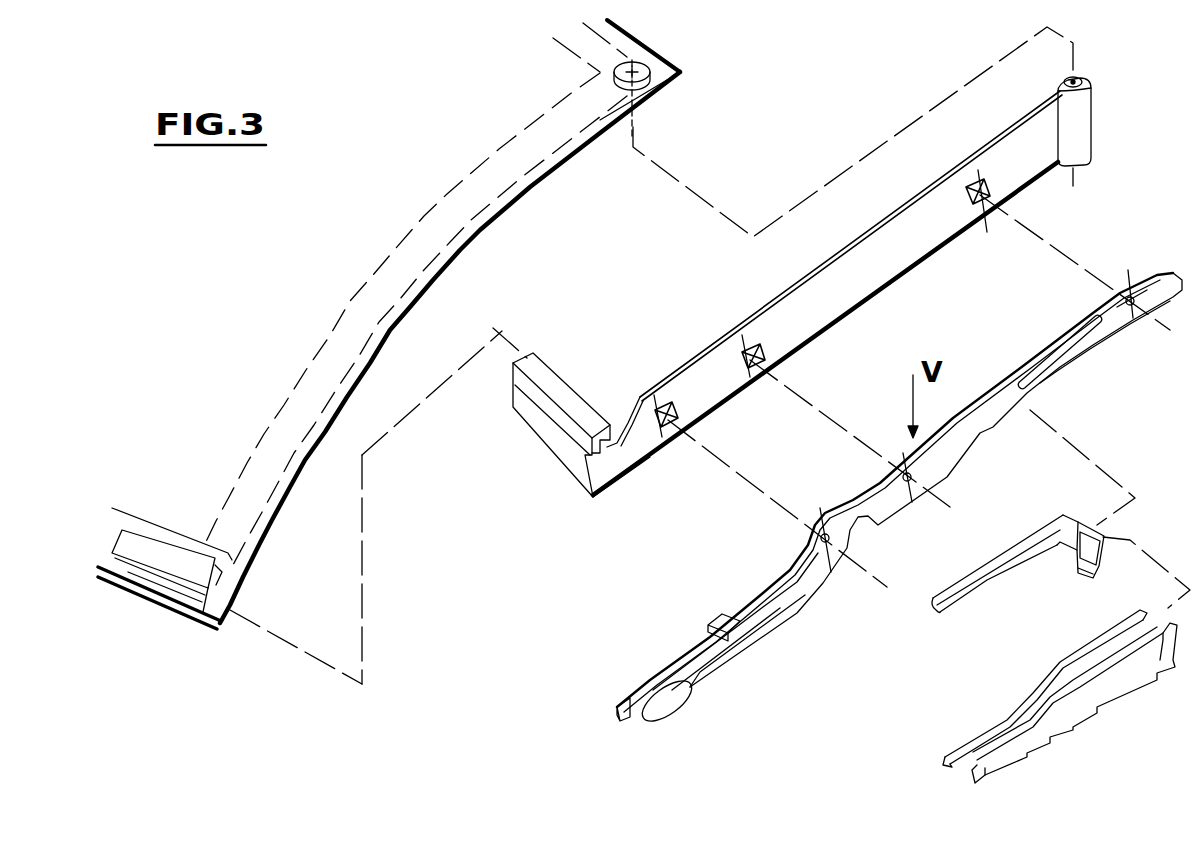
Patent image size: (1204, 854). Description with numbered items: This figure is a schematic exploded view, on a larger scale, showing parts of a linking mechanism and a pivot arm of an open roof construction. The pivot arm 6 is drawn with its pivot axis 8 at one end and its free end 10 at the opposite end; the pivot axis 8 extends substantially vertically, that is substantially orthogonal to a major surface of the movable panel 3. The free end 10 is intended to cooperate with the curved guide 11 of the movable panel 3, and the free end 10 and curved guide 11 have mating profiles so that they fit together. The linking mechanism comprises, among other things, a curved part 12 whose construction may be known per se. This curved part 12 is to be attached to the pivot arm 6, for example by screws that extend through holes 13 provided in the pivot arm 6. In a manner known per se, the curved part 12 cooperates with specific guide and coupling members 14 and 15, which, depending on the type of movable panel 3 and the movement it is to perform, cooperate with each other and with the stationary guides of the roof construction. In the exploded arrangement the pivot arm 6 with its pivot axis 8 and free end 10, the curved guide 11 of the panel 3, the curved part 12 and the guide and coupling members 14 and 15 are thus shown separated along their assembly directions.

The movable panel 3 is at (447, 163).
The pivot arm 6 is at (853, 287).
The pivot axis 8 is at (637, 112).
The free end 10 is at (550, 380).
The curved guide 11 is at (172, 572).
The curved part 12 is at (990, 437).
The holes 13 is at (668, 425).
The guide and coupling member 14 is at (1031, 568).
The guide and coupling member 15 is at (1075, 650).